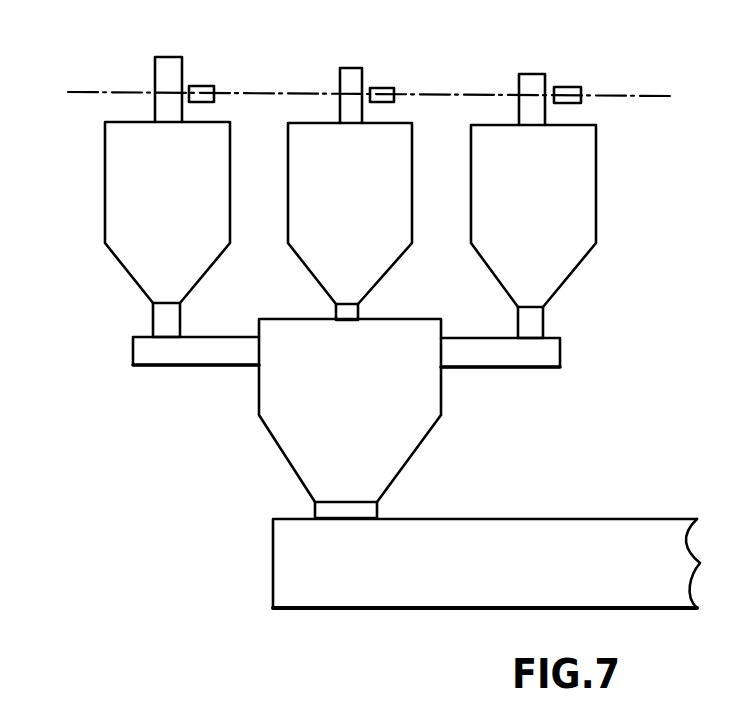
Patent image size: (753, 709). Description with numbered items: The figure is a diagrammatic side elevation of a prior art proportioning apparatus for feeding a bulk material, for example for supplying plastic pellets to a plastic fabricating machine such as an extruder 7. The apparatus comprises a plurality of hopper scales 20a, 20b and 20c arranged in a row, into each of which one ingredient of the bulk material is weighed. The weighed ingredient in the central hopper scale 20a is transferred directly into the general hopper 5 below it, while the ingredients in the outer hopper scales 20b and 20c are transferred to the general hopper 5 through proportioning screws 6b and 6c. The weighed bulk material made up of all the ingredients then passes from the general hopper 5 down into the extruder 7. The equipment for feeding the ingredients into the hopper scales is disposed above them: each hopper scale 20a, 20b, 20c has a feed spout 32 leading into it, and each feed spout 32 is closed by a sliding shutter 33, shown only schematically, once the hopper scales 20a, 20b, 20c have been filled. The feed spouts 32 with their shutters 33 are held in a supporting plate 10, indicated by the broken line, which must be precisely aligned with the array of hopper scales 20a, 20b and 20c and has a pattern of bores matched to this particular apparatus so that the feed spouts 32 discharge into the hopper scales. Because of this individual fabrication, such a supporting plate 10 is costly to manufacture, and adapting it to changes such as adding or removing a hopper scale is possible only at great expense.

The general hopper 5 is at (416, 448).
The proportioning screw 6b is at (190, 367).
The proportioning screw 6c is at (510, 368).
The extruder 7 is at (543, 520).
The supporting plate 10 is at (643, 95).
The hopper scale 20a is at (392, 264).
The hopper scale 20b is at (118, 262).
The hopper scale 20c is at (597, 200).
The feed spout 32 is at (348, 68).
The sliding shutter 33 is at (383, 88).